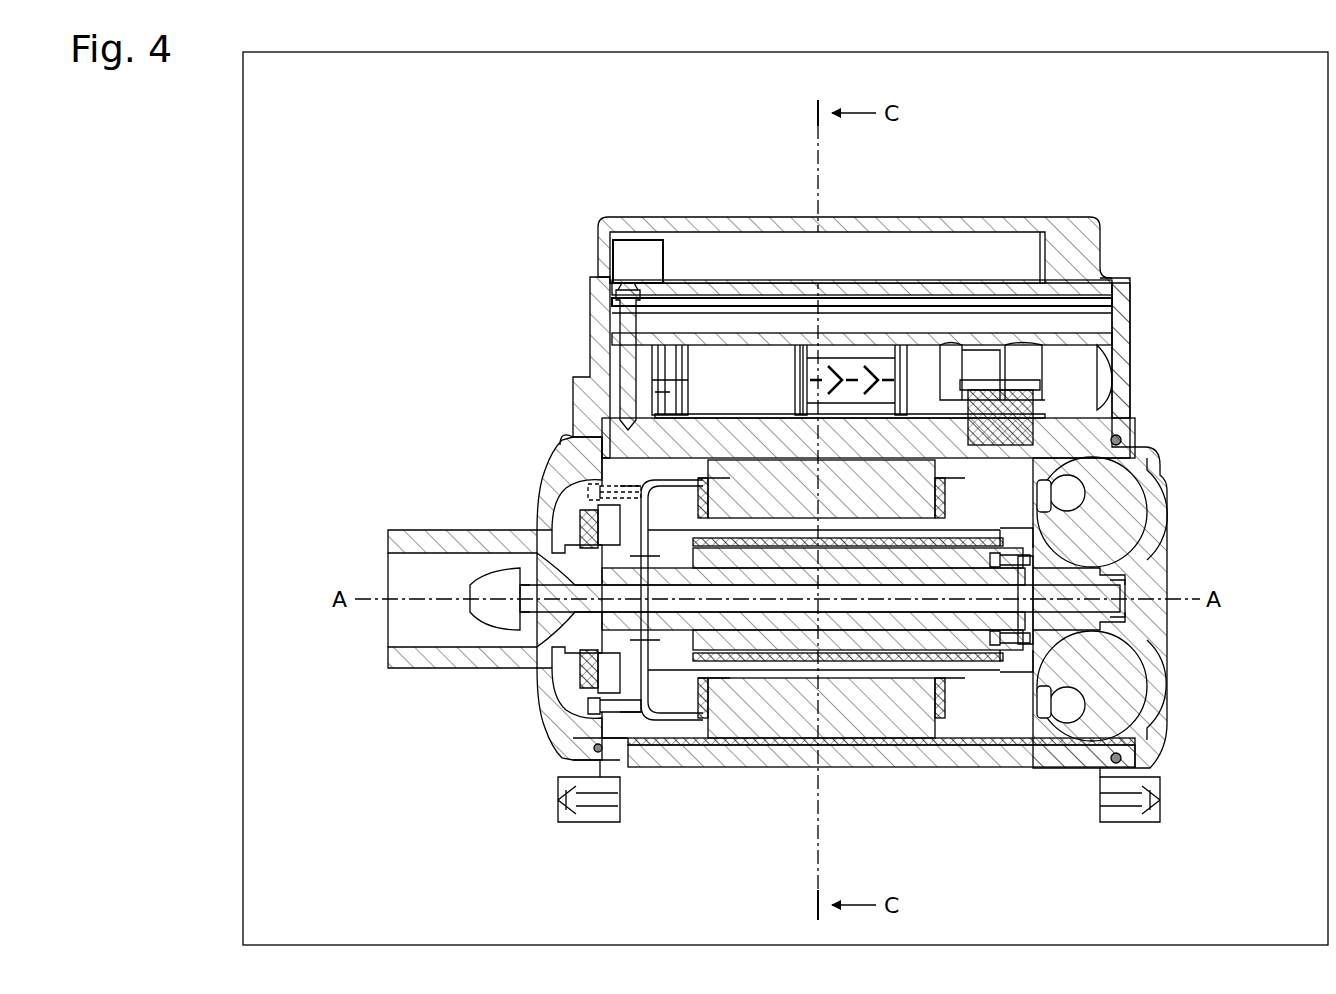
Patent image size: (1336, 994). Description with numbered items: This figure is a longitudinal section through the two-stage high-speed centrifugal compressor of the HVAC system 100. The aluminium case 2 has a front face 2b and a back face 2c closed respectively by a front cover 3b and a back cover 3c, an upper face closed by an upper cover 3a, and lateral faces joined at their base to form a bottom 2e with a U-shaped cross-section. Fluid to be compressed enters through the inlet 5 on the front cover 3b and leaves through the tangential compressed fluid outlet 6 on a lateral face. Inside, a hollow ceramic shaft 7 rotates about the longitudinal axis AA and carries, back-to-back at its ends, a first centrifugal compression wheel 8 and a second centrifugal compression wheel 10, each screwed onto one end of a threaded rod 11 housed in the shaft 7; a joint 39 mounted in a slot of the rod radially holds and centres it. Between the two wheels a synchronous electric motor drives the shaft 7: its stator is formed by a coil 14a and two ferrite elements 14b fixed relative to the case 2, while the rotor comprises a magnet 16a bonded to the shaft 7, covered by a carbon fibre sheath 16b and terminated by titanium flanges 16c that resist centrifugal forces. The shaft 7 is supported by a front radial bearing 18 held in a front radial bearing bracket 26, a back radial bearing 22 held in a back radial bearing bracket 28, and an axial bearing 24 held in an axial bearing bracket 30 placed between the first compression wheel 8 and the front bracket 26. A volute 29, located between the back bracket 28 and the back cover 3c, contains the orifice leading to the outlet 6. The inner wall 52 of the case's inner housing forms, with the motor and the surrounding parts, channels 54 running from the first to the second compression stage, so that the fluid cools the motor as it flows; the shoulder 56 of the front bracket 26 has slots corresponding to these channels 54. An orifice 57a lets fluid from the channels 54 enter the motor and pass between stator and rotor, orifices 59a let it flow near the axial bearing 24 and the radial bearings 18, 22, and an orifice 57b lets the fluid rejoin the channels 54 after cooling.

The HVAC system 100 is at (243, 388).
The case 2 is at (1022, 178).
The front face 2b is at (600, 345).
The back face 2c is at (1135, 410).
The bottom 2e is at (773, 762).
The upper cover 3a is at (1085, 234).
The front cover 3b is at (428, 545).
The back cover 3c is at (1155, 484).
The inlet 5 is at (378, 622).
The tangential compressed fluid outlet 6 is at (1070, 492).
The ceramic shaft 7 is at (985, 614).
The first centrifugal compression wheel 8 is at (487, 606).
The second centrifugal compression wheel 10 is at (1082, 612).
The threaded rod 11 is at (736, 603).
The coil 14a is at (668, 702).
The ferrite elements 14b is at (872, 720).
The magnet 16a is at (845, 487).
The carbon fibre sheath 16b is at (905, 636).
The titanium flanges 16c is at (706, 622).
The front radial bearing 18 is at (580, 682).
The back radial bearing 22 is at (1114, 716).
The axial bearing 24 is at (585, 637).
The front radial bearing bracket 26 is at (626, 652).
The back radial bearing bracket 28 is at (1030, 720).
The volute 29 is at (1125, 716).
The axial bearing bracket 30 is at (585, 470).
The joint 39 is at (810, 606).
The inner wall 52 is at (785, 445).
The channels 54 is at (733, 458).
The shoulder 56 is at (620, 395).
The orifice 57a is at (930, 465).
The orifice 57b is at (556, 532).
The orifice 59a is at (1010, 562).